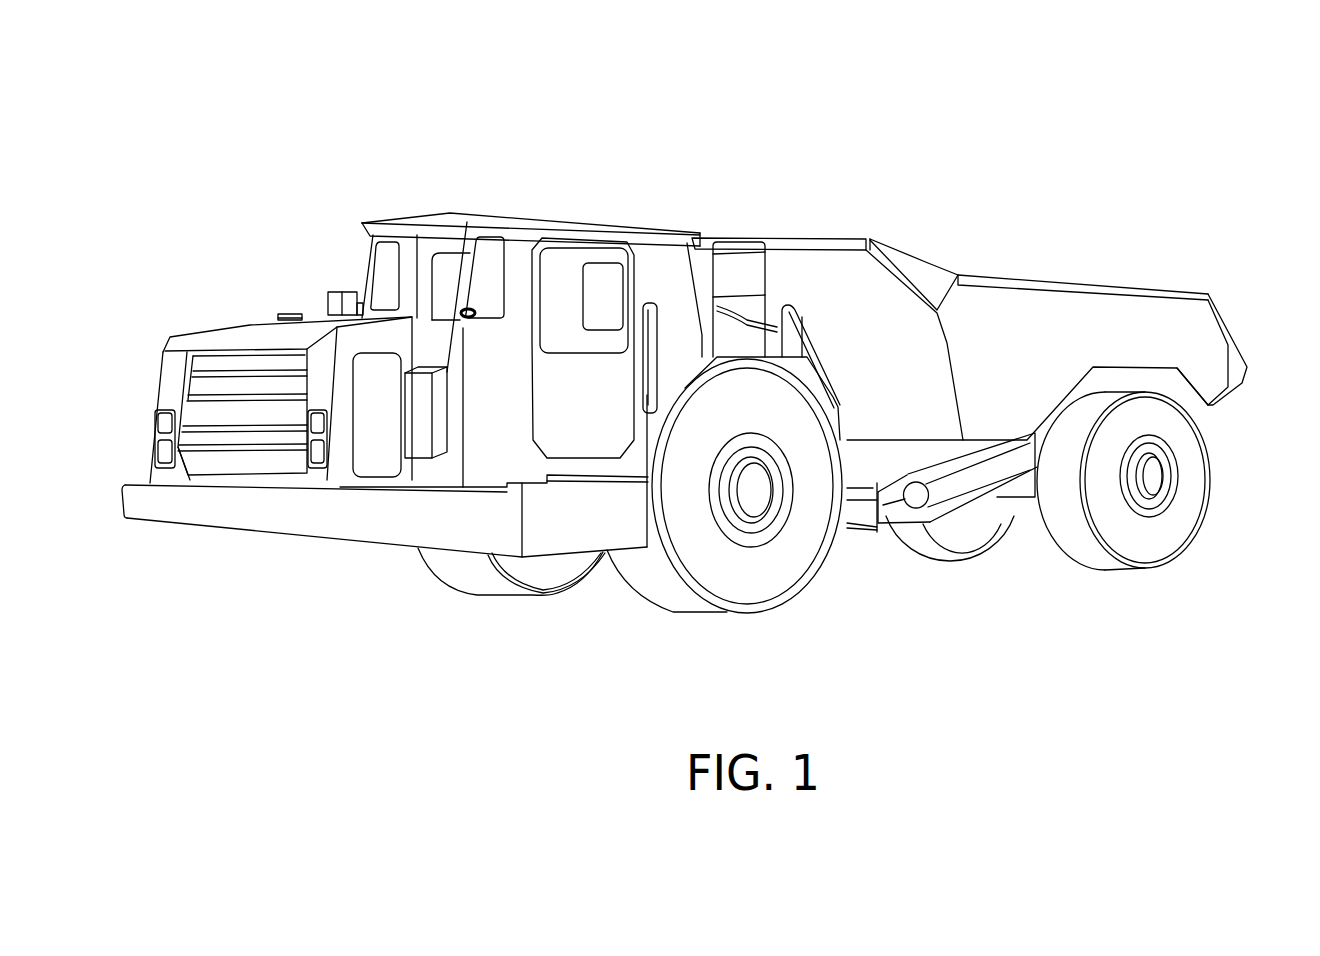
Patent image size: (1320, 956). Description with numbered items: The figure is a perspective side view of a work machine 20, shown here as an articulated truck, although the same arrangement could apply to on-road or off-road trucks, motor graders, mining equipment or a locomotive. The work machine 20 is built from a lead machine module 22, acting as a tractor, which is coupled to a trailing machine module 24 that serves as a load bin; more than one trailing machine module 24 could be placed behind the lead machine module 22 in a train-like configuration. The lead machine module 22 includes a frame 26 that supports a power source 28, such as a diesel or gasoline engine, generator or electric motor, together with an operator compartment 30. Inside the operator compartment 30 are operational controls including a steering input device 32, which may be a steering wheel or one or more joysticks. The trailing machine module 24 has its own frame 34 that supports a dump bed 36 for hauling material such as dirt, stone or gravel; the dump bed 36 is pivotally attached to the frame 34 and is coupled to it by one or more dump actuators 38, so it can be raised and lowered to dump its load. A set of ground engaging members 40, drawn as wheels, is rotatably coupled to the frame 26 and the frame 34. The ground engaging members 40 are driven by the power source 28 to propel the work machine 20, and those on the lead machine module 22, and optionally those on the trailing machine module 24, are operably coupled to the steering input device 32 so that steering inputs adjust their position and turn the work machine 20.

The work machine 20 is at (230, 112).
The lead machine module 22 is at (655, 236).
The trailing machine module 24 is at (1043, 303).
The frame 26 is at (403, 520).
The power source 28 is at (190, 337).
The operator compartment 30 is at (440, 245).
The steering input device 32 is at (470, 312).
The frame 34 is at (984, 480).
The dump bed 36 is at (1198, 357).
The dump actuator 38 is at (933, 483).
The ground engaging members 40 is at (763, 573).